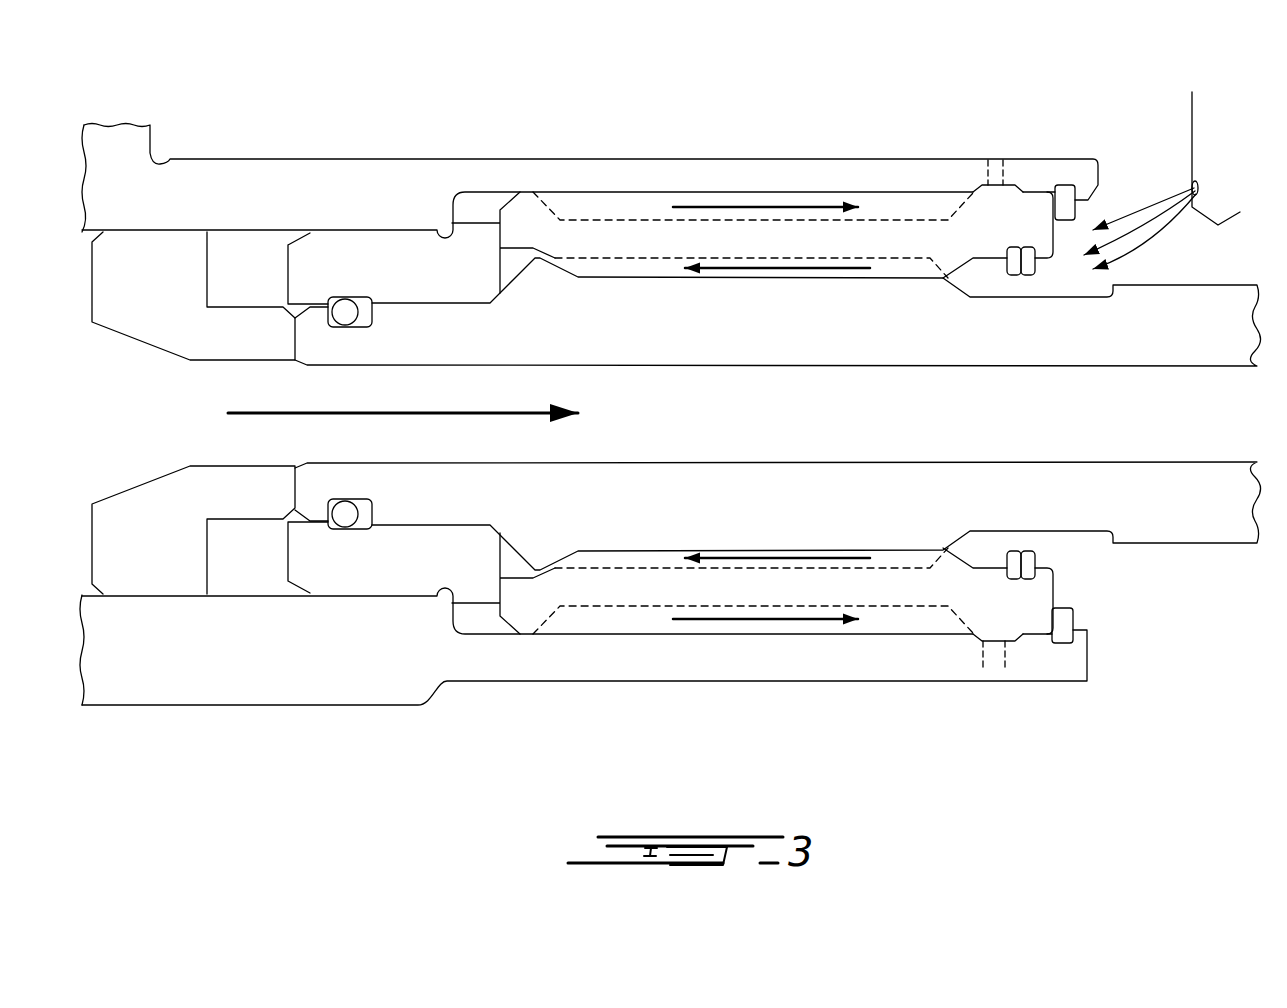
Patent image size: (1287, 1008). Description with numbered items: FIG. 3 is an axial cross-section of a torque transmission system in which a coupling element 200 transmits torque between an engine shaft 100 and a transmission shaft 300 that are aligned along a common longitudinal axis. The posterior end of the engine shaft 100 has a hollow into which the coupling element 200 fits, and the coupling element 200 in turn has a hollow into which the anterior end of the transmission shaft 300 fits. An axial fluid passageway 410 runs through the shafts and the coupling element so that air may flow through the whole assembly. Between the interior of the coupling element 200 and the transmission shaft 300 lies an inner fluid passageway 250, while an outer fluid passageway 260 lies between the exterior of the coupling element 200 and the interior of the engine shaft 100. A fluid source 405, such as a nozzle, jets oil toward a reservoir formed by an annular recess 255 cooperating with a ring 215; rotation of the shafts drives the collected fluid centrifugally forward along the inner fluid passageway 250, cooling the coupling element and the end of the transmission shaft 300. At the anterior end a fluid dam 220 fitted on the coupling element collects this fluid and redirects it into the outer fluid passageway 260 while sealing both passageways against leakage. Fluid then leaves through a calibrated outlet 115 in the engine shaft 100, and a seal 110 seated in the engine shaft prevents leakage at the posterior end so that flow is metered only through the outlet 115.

The engine shaft 100 is at (328, 656).
The seal 110 is at (1060, 193).
The outlet 115 is at (993, 160).
The coupling element 200 is at (975, 597).
The ring 215 is at (1028, 578).
The fluid dam 220 is at (347, 260).
The inner fluid passageway 250 is at (733, 268).
The annular recess 255 is at (988, 570).
The outer fluid passageway 260 is at (795, 205).
The transmission shaft 300 is at (1189, 511).
The fluid source 405 is at (1198, 183).
The fluid passageway 410 is at (180, 434).